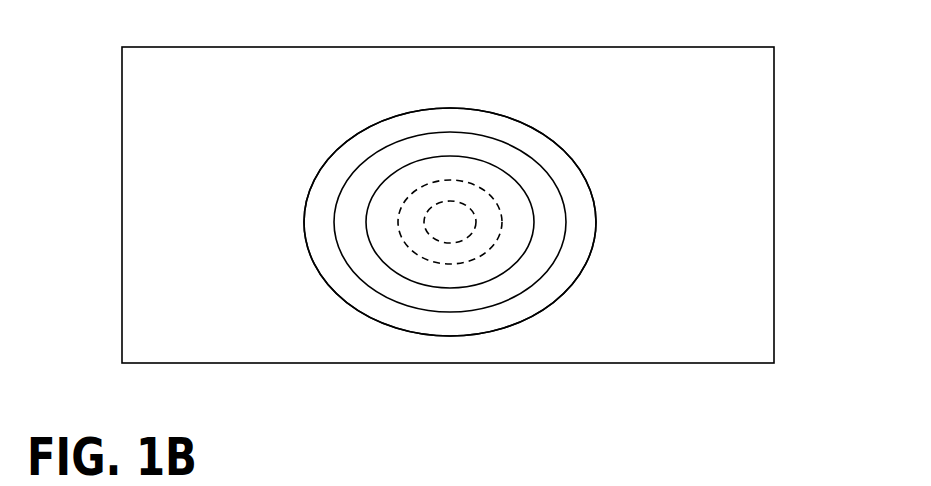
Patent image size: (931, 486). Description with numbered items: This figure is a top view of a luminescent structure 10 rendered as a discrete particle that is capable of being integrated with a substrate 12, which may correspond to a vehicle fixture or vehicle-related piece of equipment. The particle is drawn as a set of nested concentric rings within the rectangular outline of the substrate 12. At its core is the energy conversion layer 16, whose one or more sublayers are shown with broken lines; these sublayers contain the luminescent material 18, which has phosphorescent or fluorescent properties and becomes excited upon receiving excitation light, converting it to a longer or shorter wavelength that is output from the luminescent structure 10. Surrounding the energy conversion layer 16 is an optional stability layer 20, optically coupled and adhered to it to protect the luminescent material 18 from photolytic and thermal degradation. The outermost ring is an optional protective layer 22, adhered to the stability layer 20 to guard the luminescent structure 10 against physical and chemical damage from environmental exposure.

The luminescent structure 10 is at (348, 110).
The substrate 12 is at (776, 157).
The energy conversion layer 16 is at (507, 273).
The luminescent material 18 is at (430, 247).
The stability layer 20 is at (518, 147).
The protective layer 22 is at (490, 110).